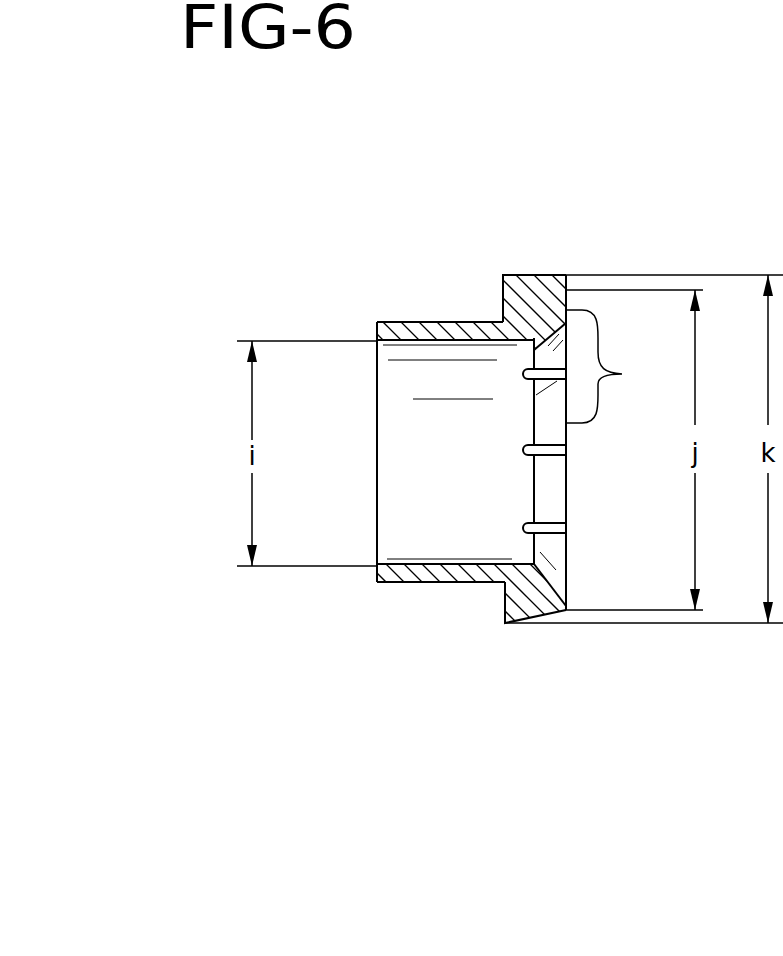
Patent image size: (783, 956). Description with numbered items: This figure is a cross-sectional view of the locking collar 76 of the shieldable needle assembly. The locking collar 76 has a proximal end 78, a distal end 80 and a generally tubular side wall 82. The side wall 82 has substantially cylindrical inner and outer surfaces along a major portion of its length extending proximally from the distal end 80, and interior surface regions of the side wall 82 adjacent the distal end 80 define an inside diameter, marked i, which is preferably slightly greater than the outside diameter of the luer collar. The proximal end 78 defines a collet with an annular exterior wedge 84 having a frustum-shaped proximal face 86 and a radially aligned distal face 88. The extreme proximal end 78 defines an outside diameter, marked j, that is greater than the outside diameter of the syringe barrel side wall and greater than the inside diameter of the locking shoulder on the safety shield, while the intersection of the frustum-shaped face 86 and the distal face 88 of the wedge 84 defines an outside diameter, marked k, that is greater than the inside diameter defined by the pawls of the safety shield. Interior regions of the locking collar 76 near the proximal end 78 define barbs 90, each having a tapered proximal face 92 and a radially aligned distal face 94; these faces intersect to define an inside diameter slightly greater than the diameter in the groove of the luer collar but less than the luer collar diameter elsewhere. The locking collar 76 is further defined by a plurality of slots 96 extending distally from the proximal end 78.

The locking collar 76 is at (505, 607).
The proximal end 78 is at (616, 366).
The distal end 80 is at (377, 370).
The tubular side wall 82 is at (437, 322).
The annular exterior wedge 84 is at (524, 275).
The frustum-shaped proximal face 86 is at (562, 277).
The radially aligned distal face 88 is at (502, 317).
The barbs 90 is at (533, 348).
The tapered proximal face 92 is at (567, 558).
The radially aligned distal face 94 is at (530, 556).
The slots 96 is at (540, 387).